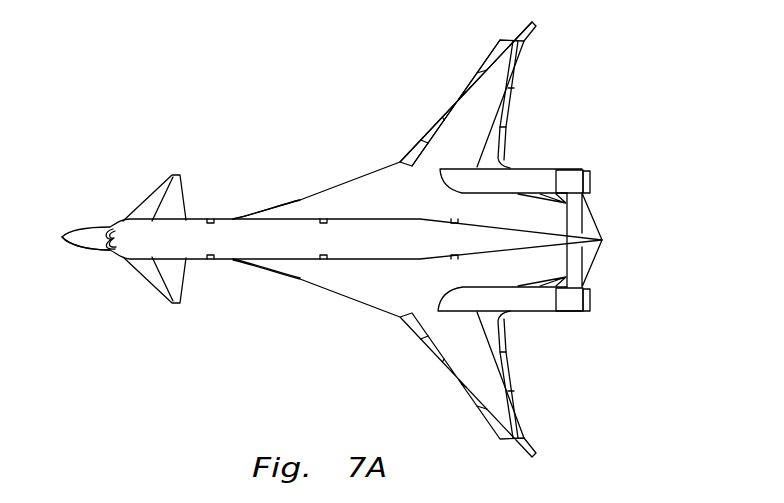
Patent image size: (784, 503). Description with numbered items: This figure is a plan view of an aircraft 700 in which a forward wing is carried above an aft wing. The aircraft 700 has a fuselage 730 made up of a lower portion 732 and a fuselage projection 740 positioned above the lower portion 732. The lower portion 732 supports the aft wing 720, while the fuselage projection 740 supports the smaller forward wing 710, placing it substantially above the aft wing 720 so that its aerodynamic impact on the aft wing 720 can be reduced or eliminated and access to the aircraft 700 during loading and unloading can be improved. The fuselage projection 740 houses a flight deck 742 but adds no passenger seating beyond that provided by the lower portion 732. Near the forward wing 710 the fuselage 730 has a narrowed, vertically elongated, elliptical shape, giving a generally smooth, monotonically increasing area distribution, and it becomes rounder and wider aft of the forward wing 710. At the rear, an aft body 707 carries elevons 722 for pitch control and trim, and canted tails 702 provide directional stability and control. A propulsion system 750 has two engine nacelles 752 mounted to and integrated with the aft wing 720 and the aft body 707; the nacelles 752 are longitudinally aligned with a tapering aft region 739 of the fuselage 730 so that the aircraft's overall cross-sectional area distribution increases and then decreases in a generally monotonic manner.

The aircraft 700 is at (381, 239).
The forward wing 710 is at (150, 196).
The aft wing 720 is at (410, 148).
The fuselage 730 is at (224, 210).
The lower portion 732 is at (418, 257).
The tapering aft region 739 is at (530, 211).
The fuselage projection 740 is at (106, 249).
The flight deck 742 is at (103, 228).
The propulsion system 750 is at (587, 245).
The engine nacelles 752 is at (525, 177).
The canted tails 702 is at (555, 191).
The aft body 707 is at (588, 170).
The elevons 722 is at (592, 220).